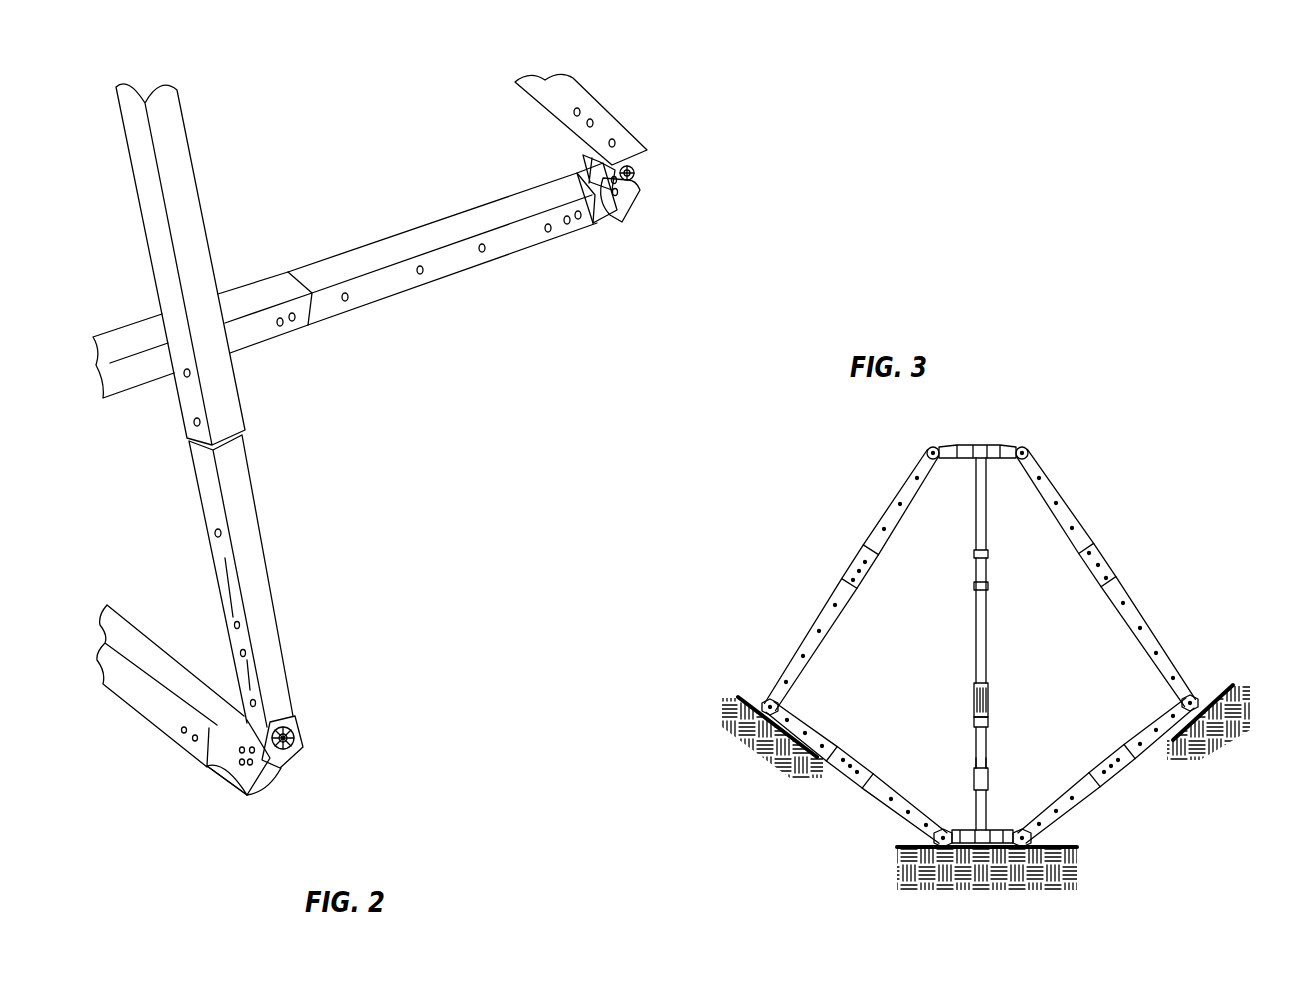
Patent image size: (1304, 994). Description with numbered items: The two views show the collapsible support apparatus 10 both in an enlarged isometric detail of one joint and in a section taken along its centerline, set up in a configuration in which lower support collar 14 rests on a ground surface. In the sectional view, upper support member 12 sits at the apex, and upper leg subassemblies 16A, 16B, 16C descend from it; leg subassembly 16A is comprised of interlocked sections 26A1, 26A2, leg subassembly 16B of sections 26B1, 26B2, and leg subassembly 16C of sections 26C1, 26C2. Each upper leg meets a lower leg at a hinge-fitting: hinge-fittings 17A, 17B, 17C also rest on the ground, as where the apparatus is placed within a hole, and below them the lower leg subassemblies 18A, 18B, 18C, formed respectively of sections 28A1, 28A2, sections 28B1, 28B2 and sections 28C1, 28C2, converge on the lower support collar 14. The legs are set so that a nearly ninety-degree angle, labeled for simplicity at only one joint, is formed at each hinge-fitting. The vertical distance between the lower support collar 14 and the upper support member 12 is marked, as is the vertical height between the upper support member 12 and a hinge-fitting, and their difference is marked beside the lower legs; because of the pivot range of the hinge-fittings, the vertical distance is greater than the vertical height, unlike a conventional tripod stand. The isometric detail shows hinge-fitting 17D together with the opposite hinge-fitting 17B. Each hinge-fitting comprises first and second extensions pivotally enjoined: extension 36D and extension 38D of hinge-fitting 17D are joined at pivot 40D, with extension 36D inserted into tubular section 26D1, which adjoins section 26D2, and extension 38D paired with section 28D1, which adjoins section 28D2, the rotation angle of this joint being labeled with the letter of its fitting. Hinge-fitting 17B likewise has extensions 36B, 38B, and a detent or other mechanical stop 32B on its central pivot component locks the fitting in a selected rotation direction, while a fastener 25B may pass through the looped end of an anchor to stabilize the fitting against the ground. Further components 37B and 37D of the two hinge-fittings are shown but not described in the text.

In FIG. 3, the apparatus 10 is at (992, 635).
In FIG. 3, the upper support member 12 is at (1010, 433).
In FIG. 3, the lower support collar 14 is at (998, 857).
In FIG. 3, the leg subassembly 16A is at (852, 576).
In FIG. 3, the leg subassembly 16B is at (1106, 577).
In FIG. 3, the leg subassembly 16C is at (979, 644).
In FIG. 3, the hinge-fitting 17A is at (737, 727).
In FIG. 2, the hinge-fitting 17B is at (656, 159).
In FIG. 3, the hinge-fitting 17B is at (1163, 690).
In FIG. 3, the hinge-fitting 17C is at (998, 702).
In FIG. 2, the hinge-fitting 17D is at (284, 778).
In FIG. 3, the leg subassembly 18A is at (852, 738).
In FIG. 3, the leg subassembly 18B is at (1105, 745).
In FIG. 3, the leg subassembly 18C is at (967, 752).
In FIG. 2, the fastener 25B is at (303, 742).
In FIG. 3, the section 26A1 is at (827, 607).
In FIG. 3, the section 26A2 is at (892, 503).
In FIG. 2, the section 26B1 is at (598, 98).
In FIG. 3, the section 26B1 is at (1138, 605).
In FIG. 3, the section 26B2 is at (1062, 497).
In FIG. 3, the section 26C1 is at (975, 618).
In FIG. 3, the section 26C2 is at (988, 517).
In FIG. 2, the section 26D1 is at (247, 500).
In FIG. 2, the leg outer tube segment 26D2 is at (192, 147).
In FIG. 3, the section 28A1 is at (810, 767).
In FIG. 3, the section 28A2 is at (887, 807).
In FIG. 2, the section 28B1 is at (423, 222).
In FIG. 3, the section 28B1 is at (1152, 750).
In FIG. 2, the section 28B2 is at (255, 278).
In FIG. 3, the section 28B2 is at (1070, 807).
In FIG. 3, the section 28C1 is at (988, 750).
In FIG. 3, the section 28C2 is at (975, 803).
In FIG. 2, the section 28D1 is at (217, 762).
In FIG. 2, the base bar segment 28D2 is at (123, 626).
In FIG. 2, the detent 32B is at (647, 175).
In FIG. 2, the first extension 36B is at (641, 137).
In FIG. 2, the first extension 36D is at (295, 725).
In FIG. 2, the bracket plate 37B is at (630, 203).
In FIG. 2, the fastener holes 37D is at (248, 765).
In FIG. 2, the second extension 38B is at (615, 218).
In FIG. 2, the second extension 38D is at (223, 767).
In FIG. 2, the pivot 40D is at (278, 777).